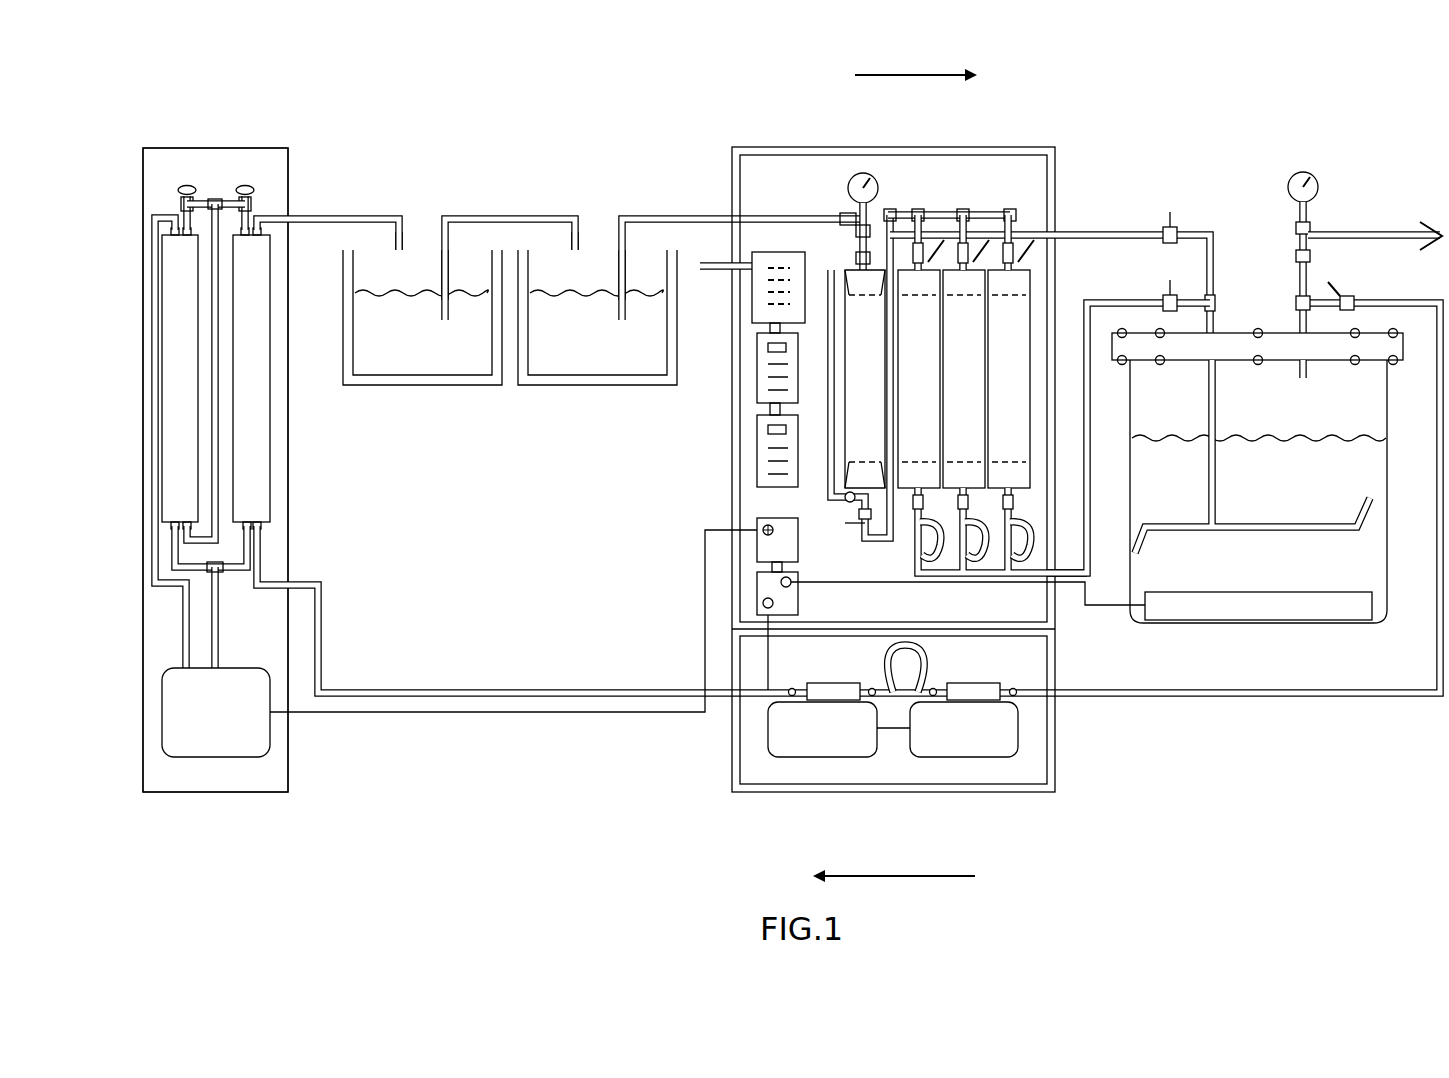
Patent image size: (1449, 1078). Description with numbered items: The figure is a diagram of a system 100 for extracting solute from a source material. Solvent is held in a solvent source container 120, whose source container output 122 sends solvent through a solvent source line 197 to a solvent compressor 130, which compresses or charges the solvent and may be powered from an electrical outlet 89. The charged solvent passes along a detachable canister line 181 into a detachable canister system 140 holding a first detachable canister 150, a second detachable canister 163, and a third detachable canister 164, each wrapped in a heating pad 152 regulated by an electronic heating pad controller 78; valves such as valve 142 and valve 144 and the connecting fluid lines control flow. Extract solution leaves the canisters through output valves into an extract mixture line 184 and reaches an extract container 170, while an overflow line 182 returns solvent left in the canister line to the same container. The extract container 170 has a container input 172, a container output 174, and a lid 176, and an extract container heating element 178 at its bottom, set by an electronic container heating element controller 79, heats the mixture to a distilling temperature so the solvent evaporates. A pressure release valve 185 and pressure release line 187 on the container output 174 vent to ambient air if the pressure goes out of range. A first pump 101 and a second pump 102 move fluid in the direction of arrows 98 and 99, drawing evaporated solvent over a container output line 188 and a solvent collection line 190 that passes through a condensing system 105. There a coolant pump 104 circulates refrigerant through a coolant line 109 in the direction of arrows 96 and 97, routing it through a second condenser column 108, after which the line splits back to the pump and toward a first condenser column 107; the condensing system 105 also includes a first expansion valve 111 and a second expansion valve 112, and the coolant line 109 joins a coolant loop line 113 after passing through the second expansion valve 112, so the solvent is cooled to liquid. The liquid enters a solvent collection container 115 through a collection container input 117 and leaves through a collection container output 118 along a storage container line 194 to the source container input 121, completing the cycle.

The system 100 is at (177, 50).
The condensing system 105 is at (147, 146).
The first condenser column 107 is at (262, 438).
The second condenser column 108 is at (168, 403).
The coolant line 109 is at (168, 578).
The first expansion valve 111 is at (182, 206).
The second expansion valve 112 is at (250, 202).
The coolant loop line 113 is at (215, 200).
The arrow 96 is at (195, 626).
The arrow 97 is at (227, 618).
The coolant pump 104 is at (238, 725).
The solvent collection line 190 is at (330, 222).
The solvent collection container 115 is at (428, 390).
The collection container input 117 is at (403, 248).
The collection container output 118 is at (445, 322).
The storage container line 194 is at (490, 222).
The solvent source container 120 is at (603, 390).
The source container input 121 is at (578, 248).
The source container output 122 is at (622, 322).
The solvent source line 197 is at (640, 222).
The arrow 98 is at (856, 75).
The arrow 99 is at (934, 878).
The detachable canister system 140 is at (970, 195).
The electronic heating pad controller 78 is at (757, 370).
The electronic container heating element controller 79 is at (757, 452).
The electrical outlet 89 is at (805, 582).
The solvent compressor 130 is at (852, 262).
The first detachable canister 150 is at (895, 522).
The detachable canister line 181 is at (1009, 212).
The overflow line 182 is at (1097, 232).
The valve 142 is at (1008, 262).
The heating pad 152 is at (964, 414).
The valve 144 is at (1020, 475).
The second detachable canister 163 is at (965, 522).
The third detachable canister 164 is at (1010, 522).
The extract mixture line 184 is at (1093, 300).
The pressure release valve 185 is at (1305, 173).
The pressure release line 187 is at (1357, 232).
The container output line 188 is at (1227, 698).
The lid 176 is at (1404, 350).
The extract container 170 is at (1388, 490).
The container input 172 is at (1218, 412).
The container output 174 is at (1306, 378).
The extract container heating element 178 is at (1374, 606).
The second pump 102 is at (845, 740).
The first pump 101 is at (985, 740).